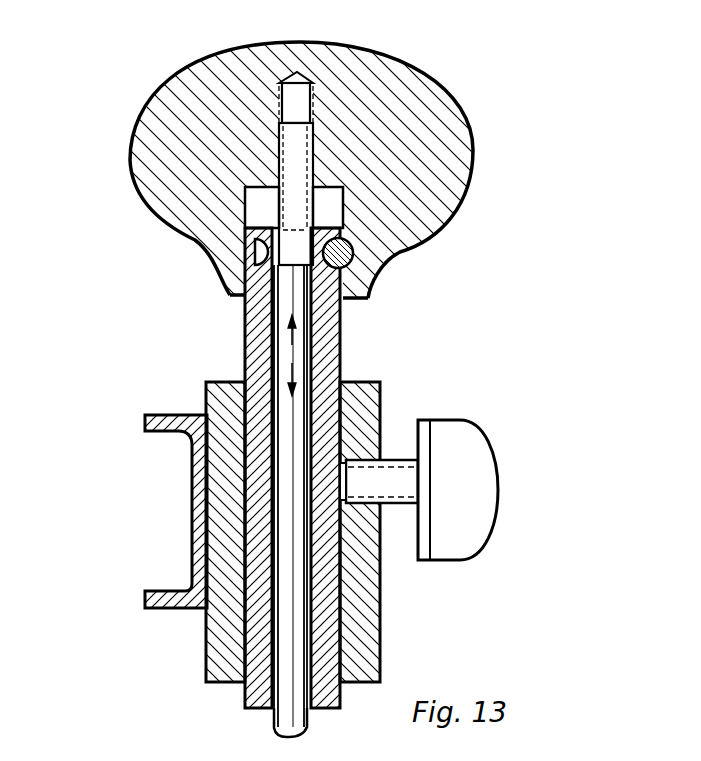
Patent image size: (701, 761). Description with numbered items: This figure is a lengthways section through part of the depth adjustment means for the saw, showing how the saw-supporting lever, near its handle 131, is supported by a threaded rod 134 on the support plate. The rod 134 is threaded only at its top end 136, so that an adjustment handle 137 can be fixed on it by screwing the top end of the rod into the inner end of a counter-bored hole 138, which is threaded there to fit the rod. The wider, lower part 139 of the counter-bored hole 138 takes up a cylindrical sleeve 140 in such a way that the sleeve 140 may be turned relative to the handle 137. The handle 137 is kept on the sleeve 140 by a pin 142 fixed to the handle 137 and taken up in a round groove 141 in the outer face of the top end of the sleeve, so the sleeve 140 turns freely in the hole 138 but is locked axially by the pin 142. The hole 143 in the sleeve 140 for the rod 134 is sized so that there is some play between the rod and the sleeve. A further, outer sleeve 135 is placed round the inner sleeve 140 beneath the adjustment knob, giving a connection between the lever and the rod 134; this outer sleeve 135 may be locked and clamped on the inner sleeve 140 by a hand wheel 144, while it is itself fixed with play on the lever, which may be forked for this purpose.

The handle 131 is at (177, 416).
The threaded rod 134 is at (285, 463).
The sleeve 135 is at (362, 648).
The threaded top end 136 is at (277, 155).
The handle 137 is at (202, 113).
The counter-bored hole 138 is at (318, 178).
The lower part of the counter-bored hole 139 is at (330, 204).
The cylindrical sleeve 140 is at (340, 362).
The round groove 141 is at (252, 241).
The pin 142 is at (355, 247).
The hole 143 is at (317, 337).
The hand wheel 144 is at (495, 433).